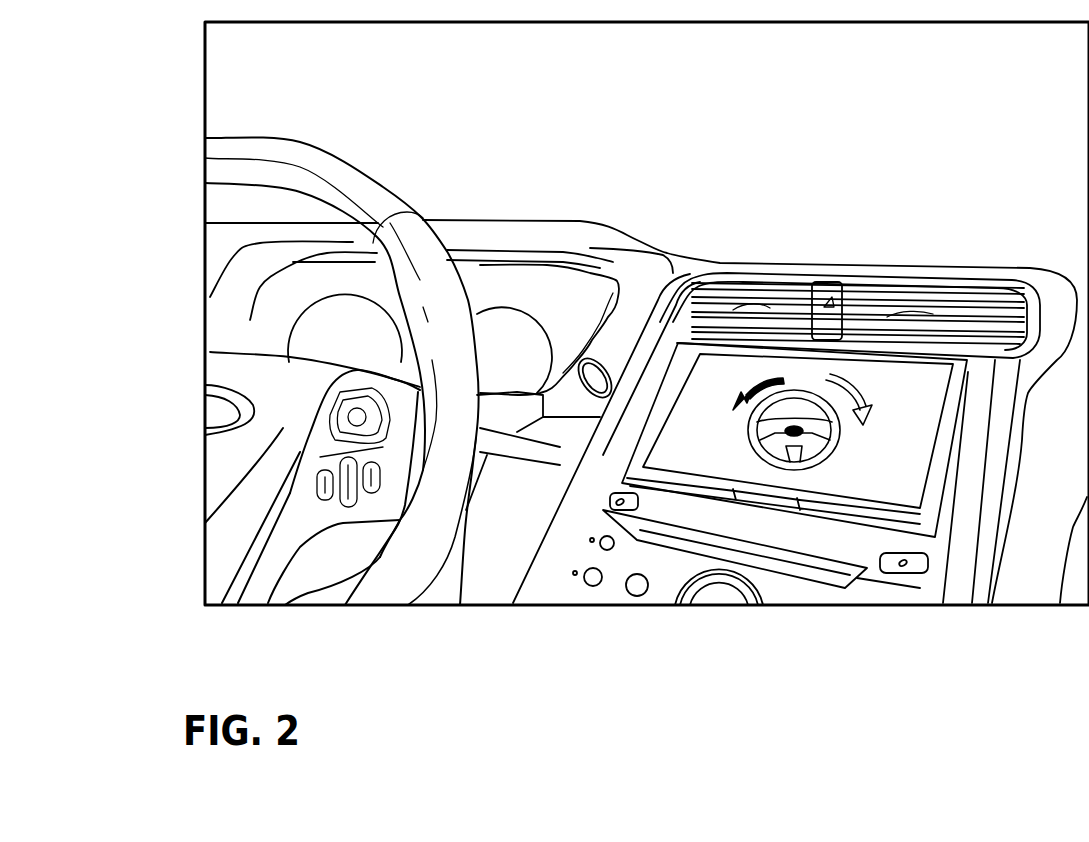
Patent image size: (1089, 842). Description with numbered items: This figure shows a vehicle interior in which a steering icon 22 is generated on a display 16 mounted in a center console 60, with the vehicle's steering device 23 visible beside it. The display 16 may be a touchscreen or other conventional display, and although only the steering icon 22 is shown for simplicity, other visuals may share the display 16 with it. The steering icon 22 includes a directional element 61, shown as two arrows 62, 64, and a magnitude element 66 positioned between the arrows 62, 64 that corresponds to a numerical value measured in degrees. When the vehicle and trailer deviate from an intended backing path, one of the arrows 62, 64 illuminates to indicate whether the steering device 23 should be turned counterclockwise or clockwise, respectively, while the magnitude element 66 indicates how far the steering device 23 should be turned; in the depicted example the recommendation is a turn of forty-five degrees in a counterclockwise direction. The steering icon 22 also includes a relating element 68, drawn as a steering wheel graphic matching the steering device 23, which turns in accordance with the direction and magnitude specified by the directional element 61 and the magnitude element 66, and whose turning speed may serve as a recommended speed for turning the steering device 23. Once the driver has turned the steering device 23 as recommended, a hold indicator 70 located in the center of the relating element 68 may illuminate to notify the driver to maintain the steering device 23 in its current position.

The display 16 is at (937, 363).
The steering icon 22 is at (885, 372).
The steering device 23 is at (357, 176).
The center console 60 is at (722, 342).
The directional element 61 is at (806, 326).
The arrow 62 is at (745, 378).
The arrow 64 is at (873, 399).
The magnitude element 66 is at (801, 435).
The relating element 68 is at (827, 462).
The hold indicator 70 is at (806, 430).